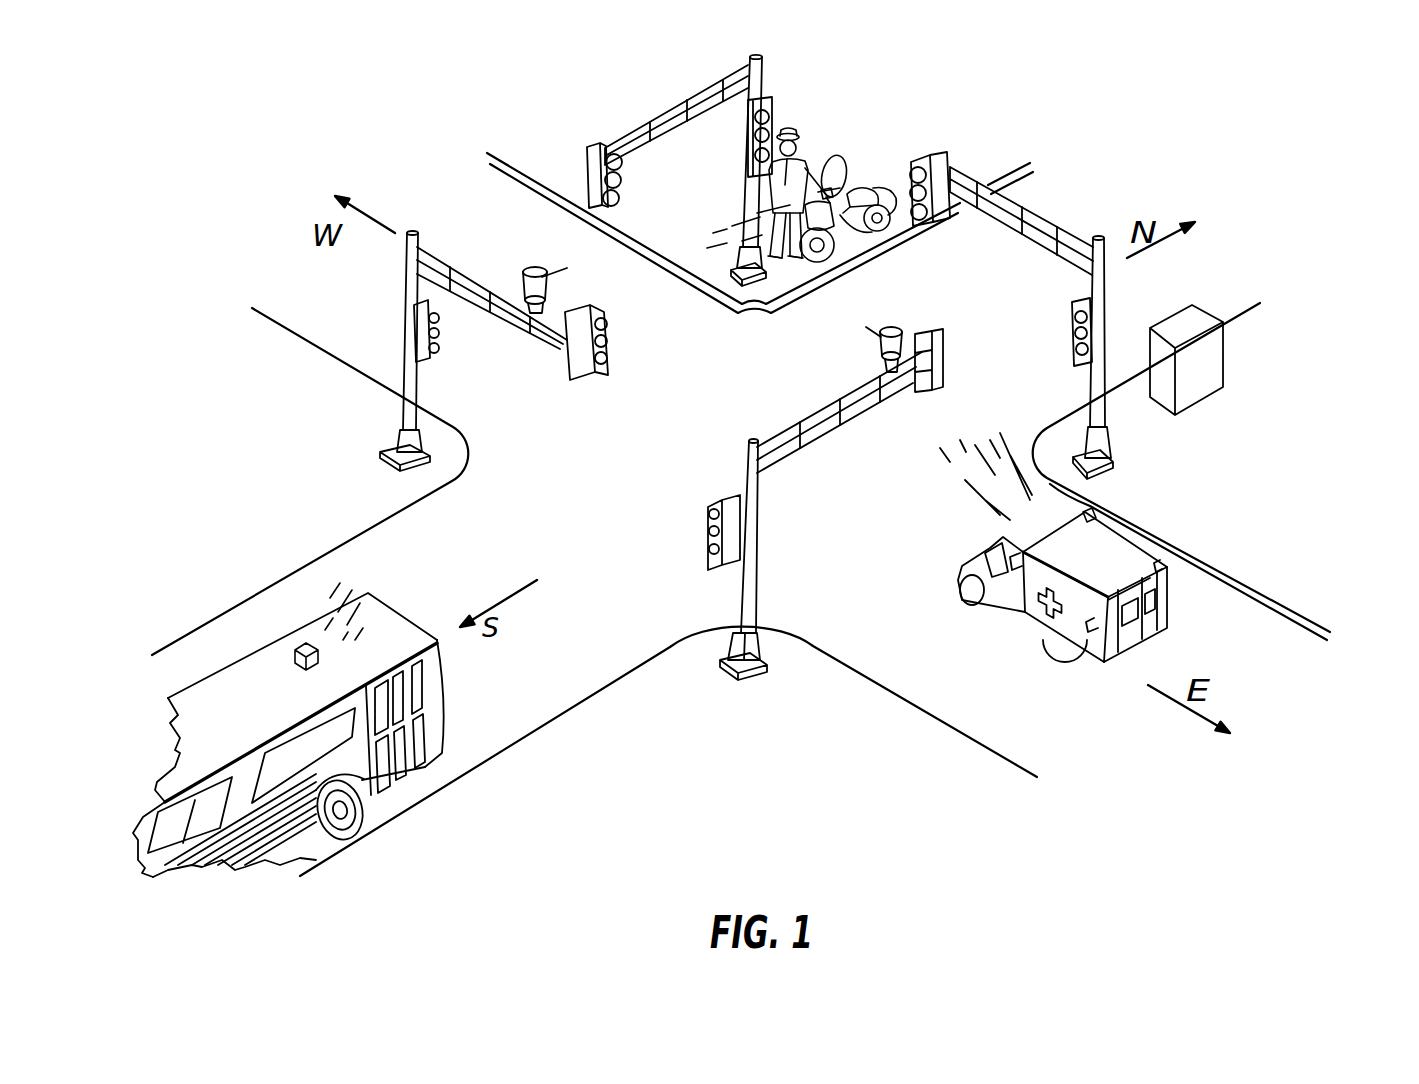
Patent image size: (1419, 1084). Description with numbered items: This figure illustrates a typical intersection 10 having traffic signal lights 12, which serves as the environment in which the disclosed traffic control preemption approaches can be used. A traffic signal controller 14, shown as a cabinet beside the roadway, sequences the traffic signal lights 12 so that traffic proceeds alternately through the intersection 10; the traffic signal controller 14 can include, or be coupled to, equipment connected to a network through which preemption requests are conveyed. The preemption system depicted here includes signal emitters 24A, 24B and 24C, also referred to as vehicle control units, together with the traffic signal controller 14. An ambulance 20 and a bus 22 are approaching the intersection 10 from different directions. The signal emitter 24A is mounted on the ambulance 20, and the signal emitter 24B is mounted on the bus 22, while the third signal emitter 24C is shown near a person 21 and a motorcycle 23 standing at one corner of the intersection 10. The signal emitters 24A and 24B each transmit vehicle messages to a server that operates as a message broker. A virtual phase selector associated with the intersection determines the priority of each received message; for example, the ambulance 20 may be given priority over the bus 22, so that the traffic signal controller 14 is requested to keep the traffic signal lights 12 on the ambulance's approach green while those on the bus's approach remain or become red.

The intersection 10 is at (1320, 563).
The traffic signal lights 12 is at (743, 152).
The traffic signal controller 14 is at (1215, 350).
The ambulance 20 is at (1037, 628).
The police officer 21 is at (787, 130).
The bus 22 is at (267, 828).
The motorcycle 23 is at (887, 187).
The signal emitter 24A is at (1115, 504).
The signal emitter 24B is at (305, 643).
The signal emitter 24C is at (823, 192).